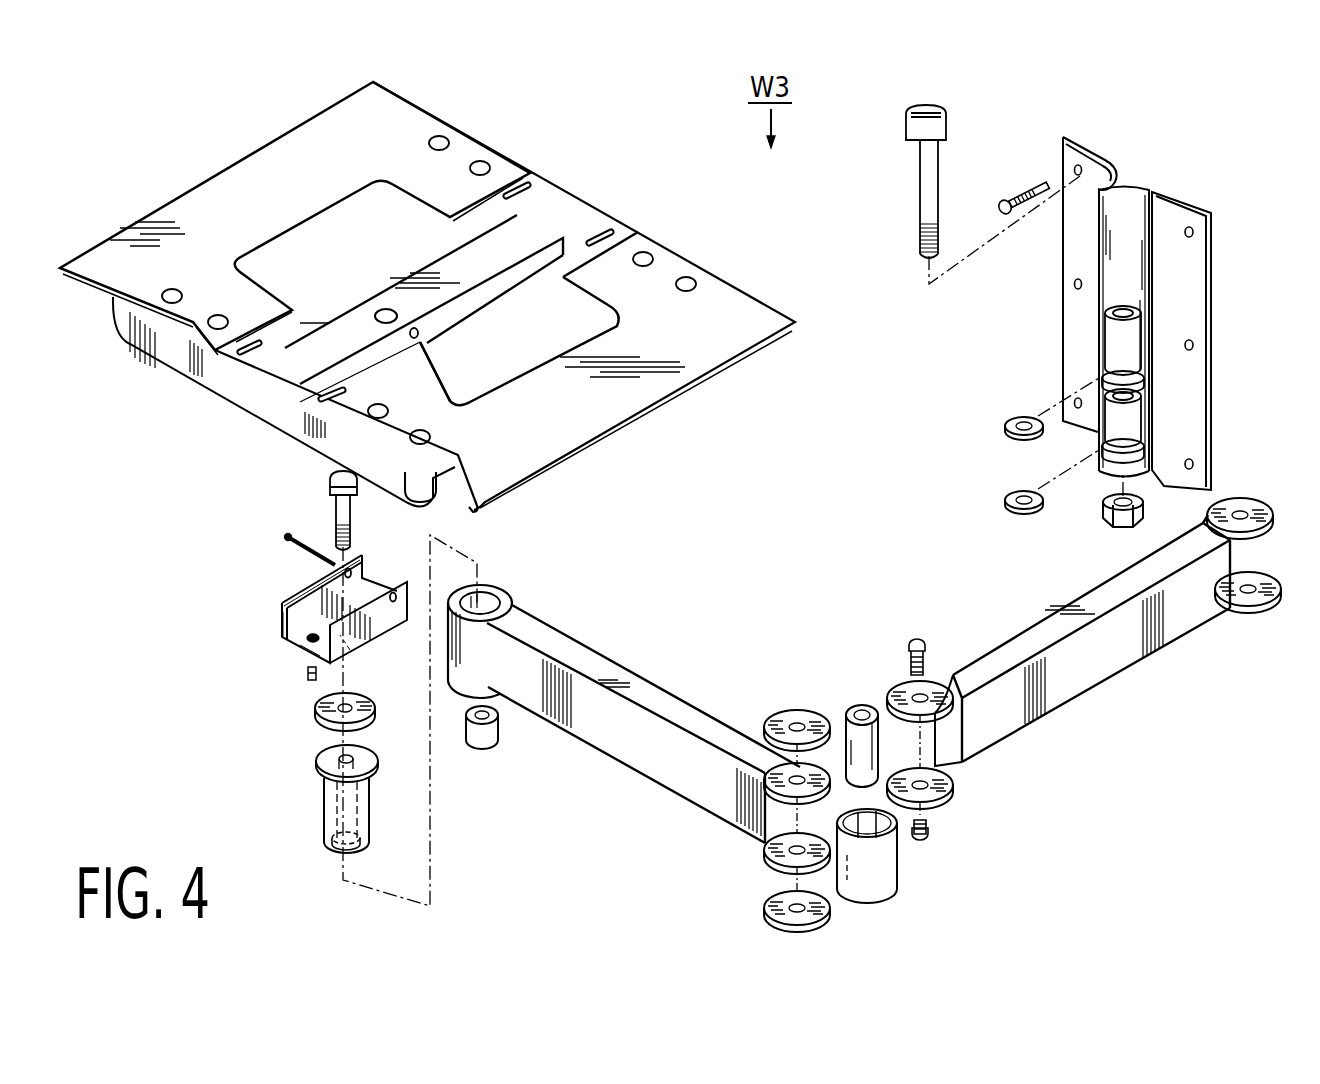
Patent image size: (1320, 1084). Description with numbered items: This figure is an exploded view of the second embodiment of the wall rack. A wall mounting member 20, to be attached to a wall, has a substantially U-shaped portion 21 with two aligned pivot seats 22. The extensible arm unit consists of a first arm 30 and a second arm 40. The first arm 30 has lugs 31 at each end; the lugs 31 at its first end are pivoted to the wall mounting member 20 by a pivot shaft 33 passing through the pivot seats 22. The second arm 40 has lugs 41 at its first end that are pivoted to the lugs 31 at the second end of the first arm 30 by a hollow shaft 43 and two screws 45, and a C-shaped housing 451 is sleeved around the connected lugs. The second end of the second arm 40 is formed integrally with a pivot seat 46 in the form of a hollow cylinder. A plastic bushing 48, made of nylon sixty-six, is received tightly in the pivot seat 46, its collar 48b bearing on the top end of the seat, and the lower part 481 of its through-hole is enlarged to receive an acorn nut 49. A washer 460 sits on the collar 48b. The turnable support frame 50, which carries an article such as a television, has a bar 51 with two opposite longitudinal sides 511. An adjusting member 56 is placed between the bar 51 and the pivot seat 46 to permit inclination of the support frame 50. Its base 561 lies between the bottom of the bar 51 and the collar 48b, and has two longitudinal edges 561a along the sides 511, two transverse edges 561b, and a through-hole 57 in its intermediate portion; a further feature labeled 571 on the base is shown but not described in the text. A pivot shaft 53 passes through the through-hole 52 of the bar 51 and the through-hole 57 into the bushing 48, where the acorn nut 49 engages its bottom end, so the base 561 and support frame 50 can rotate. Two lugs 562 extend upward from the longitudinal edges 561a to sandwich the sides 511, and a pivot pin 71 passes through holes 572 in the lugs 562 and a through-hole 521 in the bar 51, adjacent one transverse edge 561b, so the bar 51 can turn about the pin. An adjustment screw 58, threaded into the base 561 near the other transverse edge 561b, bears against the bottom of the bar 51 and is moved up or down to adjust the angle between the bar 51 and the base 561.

The wall mounting member 20 is at (1177, 189).
The U-shaped portion 21 is at (1117, 185).
The pivot seats 22 is at (1143, 414).
The first arm 30 is at (1102, 679).
The lugs 31 is at (905, 767).
The pivot shaft 33 is at (938, 200).
The second arm 40 is at (612, 665).
The lugs 41 is at (765, 855).
The hollow shaft 43 is at (843, 720).
The screws 45 is at (927, 637).
The C-shaped housing 451 is at (890, 900).
The pivot seat 46 is at (510, 597).
The plastic bushing 48 is at (323, 798).
The collar 48b is at (323, 758).
The lower part of through-hole 481 is at (330, 840).
The acorn nut 49 is at (500, 733).
The support frame 50 is at (585, 205).
The bar 51 is at (345, 312).
The longitudinal sides 511 is at (502, 288).
The through-hole 52 is at (380, 310).
The through-hole 521 is at (421, 334).
The pivot shaft 53 is at (341, 508).
The adjusting member 56 is at (400, 620).
The base 561 is at (300, 607).
The longitudinal edges 561a is at (290, 622).
The transverse edges 561b is at (292, 658).
The lugs 562 is at (340, 577).
The slot 571 is at (300, 640).
The holes 572 is at (393, 592).
The through-hole 57 is at (350, 650).
The adjustment screw 58 is at (303, 677).
The washer 460 is at (373, 715).
The pivot pin 71 is at (288, 536).